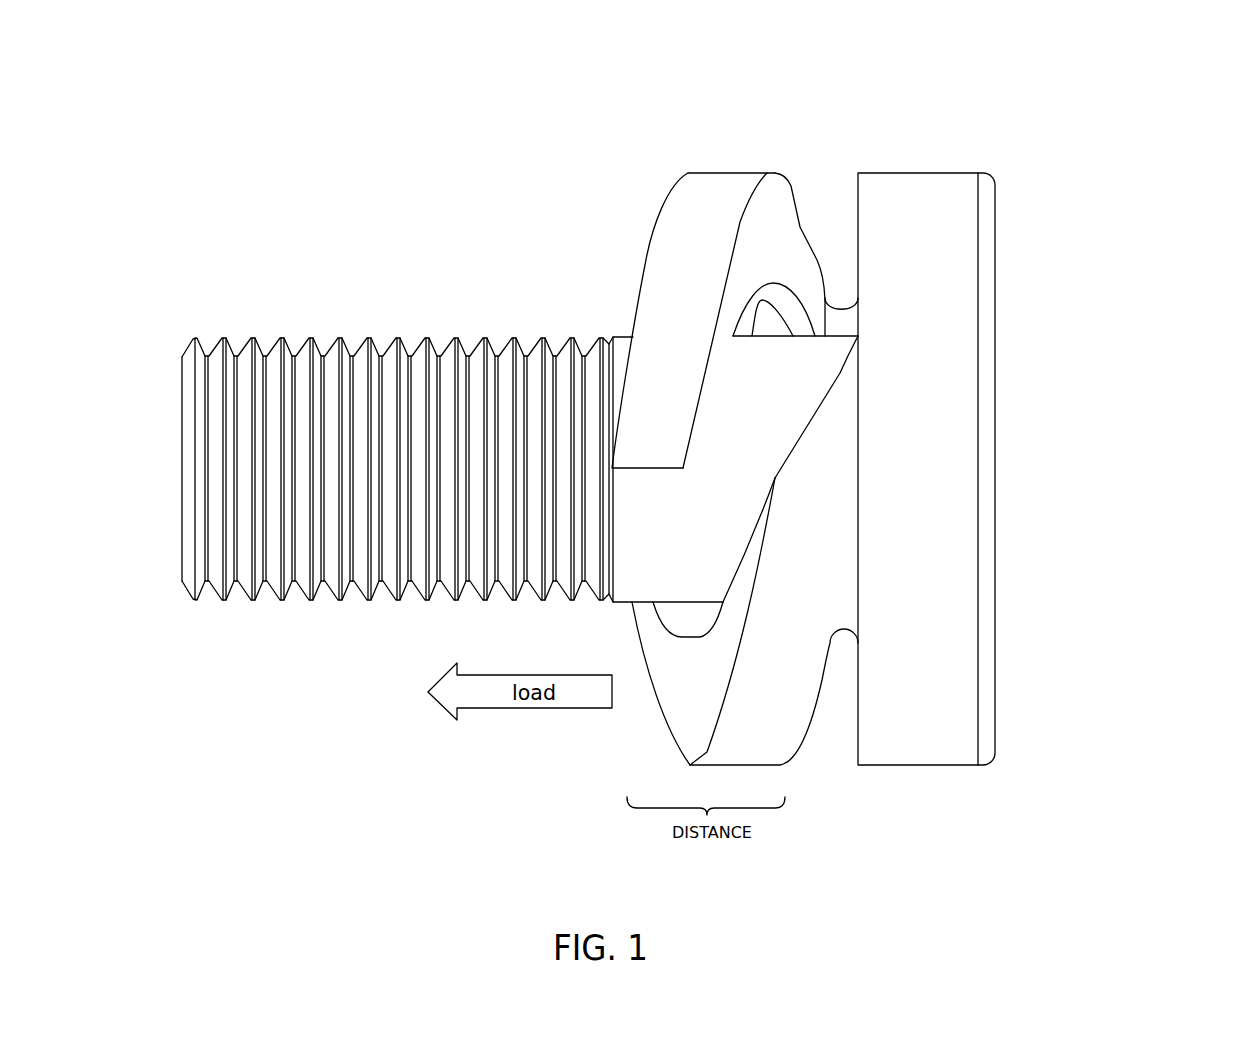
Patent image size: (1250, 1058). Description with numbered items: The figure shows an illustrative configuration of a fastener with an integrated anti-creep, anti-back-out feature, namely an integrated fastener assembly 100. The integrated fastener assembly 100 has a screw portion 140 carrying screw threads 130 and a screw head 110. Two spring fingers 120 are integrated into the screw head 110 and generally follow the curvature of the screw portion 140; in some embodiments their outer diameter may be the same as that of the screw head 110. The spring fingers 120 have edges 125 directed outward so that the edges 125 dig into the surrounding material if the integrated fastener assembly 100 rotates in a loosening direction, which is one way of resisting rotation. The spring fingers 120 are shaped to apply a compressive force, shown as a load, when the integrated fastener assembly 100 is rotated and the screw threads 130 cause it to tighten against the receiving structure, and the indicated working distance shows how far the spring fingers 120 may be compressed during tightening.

The integrated fastener assembly 100 is at (1166, 118).
The screw head 110 is at (988, 373).
The spring fingers 120 is at (713, 171).
The edges 125 is at (650, 453).
The screw threads 130 is at (308, 345).
The screw portion 140 is at (182, 458).